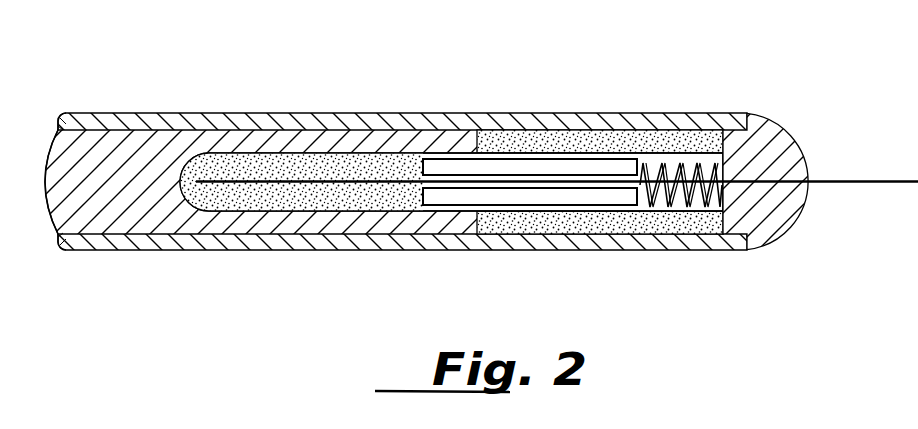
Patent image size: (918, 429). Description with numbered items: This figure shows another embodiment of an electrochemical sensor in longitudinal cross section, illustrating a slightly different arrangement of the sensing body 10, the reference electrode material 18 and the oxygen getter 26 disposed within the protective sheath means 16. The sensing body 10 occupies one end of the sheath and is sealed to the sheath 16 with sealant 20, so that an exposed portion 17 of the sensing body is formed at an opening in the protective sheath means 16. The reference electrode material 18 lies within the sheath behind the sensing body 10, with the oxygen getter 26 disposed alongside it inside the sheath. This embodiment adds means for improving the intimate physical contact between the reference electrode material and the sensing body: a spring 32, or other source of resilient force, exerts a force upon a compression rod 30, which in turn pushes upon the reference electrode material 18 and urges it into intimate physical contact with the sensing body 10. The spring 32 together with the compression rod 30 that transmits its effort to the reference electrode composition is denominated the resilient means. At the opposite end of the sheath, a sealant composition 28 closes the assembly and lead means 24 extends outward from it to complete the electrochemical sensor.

The sensing body 10 is at (130, 157).
The protective sheath means 16 is at (218, 124).
The exposed portion 17 is at (48, 196).
The reference electrode material 18 is at (325, 162).
The sealant 20 is at (60, 126).
The lead means 24 is at (863, 185).
The oxygen getter 26 is at (572, 140).
The sealant composition 28 is at (773, 140).
The compression rod 30 is at (550, 198).
The spring 32 is at (665, 200).